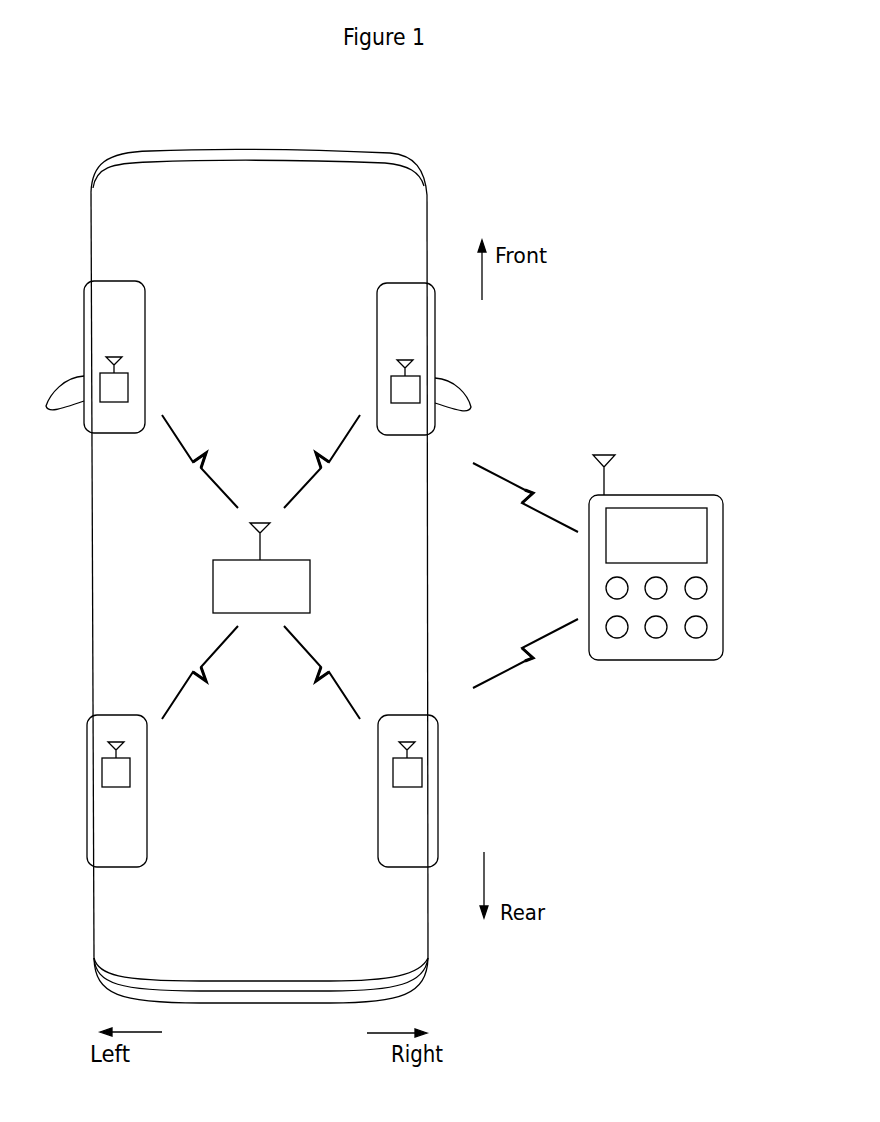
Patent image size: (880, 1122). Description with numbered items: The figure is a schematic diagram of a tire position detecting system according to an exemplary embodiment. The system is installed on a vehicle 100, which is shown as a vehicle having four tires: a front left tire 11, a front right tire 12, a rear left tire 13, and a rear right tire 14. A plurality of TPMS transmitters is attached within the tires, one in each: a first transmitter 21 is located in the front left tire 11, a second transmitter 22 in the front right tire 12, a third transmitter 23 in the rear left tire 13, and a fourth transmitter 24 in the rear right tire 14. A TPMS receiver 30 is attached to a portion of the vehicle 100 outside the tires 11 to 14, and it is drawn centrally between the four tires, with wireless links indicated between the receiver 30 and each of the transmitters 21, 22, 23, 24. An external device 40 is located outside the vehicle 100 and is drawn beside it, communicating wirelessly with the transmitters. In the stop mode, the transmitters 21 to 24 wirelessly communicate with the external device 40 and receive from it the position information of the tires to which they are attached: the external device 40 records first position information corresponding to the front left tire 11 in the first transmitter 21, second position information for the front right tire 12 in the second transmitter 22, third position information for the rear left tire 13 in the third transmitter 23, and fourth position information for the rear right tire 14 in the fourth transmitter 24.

The vehicle 100 is at (497, 160).
The front left tire 11 is at (135, 326).
The front right tire 12 is at (385, 327).
The rear left tire 13 is at (138, 832).
The rear right tire 14 is at (386, 832).
The first transmitter 21 is at (123, 387).
The second transmitter 22 is at (396, 387).
The third transmitter 23 is at (128, 773).
The fourth transmitter 24 is at (396, 773).
The TPMS receiver 30 is at (303, 585).
The external device 40 is at (654, 661).